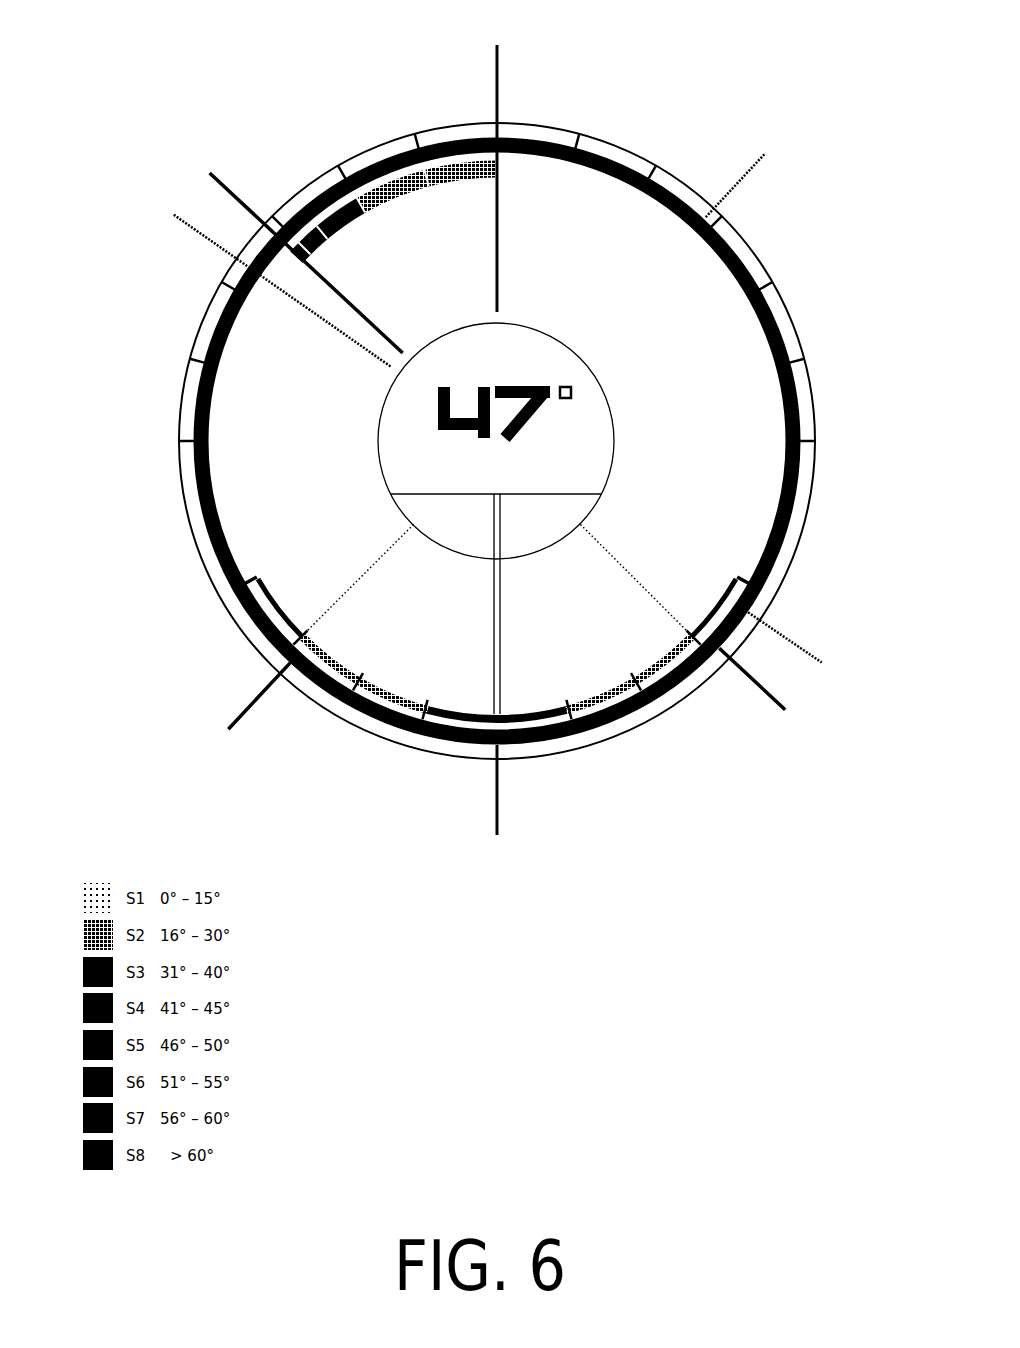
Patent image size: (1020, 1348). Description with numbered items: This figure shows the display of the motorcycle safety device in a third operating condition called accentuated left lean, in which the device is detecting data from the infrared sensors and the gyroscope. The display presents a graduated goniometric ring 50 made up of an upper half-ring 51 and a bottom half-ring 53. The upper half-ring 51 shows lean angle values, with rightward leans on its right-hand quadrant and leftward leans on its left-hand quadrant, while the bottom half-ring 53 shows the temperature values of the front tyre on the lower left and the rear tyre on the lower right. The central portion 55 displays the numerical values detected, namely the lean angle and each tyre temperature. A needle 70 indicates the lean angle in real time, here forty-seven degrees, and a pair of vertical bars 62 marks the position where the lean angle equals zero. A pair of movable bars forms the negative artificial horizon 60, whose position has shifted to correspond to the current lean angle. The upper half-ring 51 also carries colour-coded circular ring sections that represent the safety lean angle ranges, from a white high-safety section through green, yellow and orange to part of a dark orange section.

The graduated goniometric ring 50 is at (152, 97).
The upper half-ring 51 is at (194, 325).
The bottom half-ring 53 is at (406, 753).
The central portion 55 is at (590, 357).
The negative artificial horizon 60 is at (767, 175).
The vertical bars 62 is at (505, 72).
The needle 70 is at (228, 176).